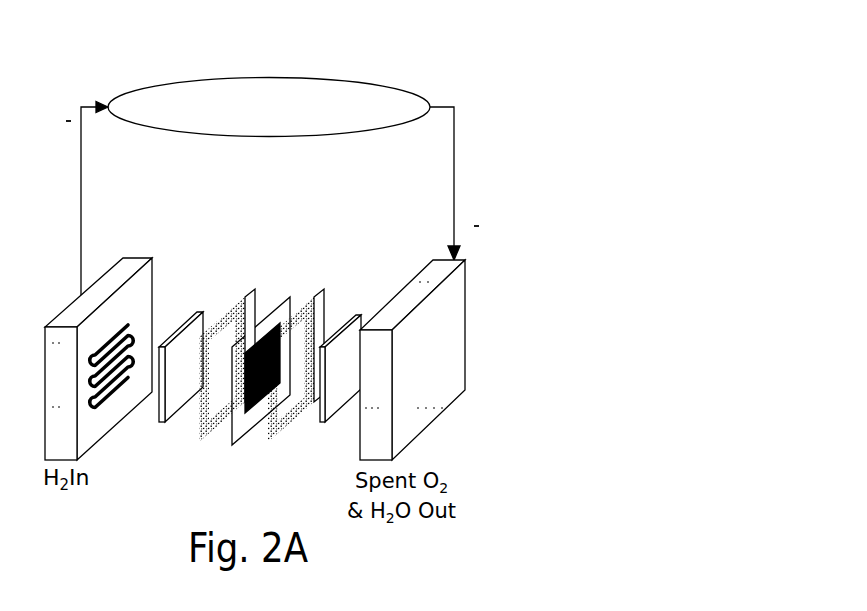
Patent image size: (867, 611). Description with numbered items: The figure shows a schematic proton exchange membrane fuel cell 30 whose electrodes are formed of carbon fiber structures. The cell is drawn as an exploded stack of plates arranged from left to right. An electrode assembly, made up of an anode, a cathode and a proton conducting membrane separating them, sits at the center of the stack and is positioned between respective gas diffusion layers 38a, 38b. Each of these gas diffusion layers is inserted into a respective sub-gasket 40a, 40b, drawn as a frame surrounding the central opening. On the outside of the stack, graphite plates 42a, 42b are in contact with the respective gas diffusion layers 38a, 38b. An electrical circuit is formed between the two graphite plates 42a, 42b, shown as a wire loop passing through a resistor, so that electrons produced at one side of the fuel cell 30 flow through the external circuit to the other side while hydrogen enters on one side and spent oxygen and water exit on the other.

The proton exchange membrane fuel cell 30 is at (413, 54).
The graphite plate 42a is at (133, 258).
The gas diffusion layer 38a is at (203, 312).
The sub-gasket 40a is at (255, 289).
The sub-gasket 40b is at (324, 289).
The gas diffusion layer 38b is at (359, 315).
The graphite plate 42b is at (428, 262).